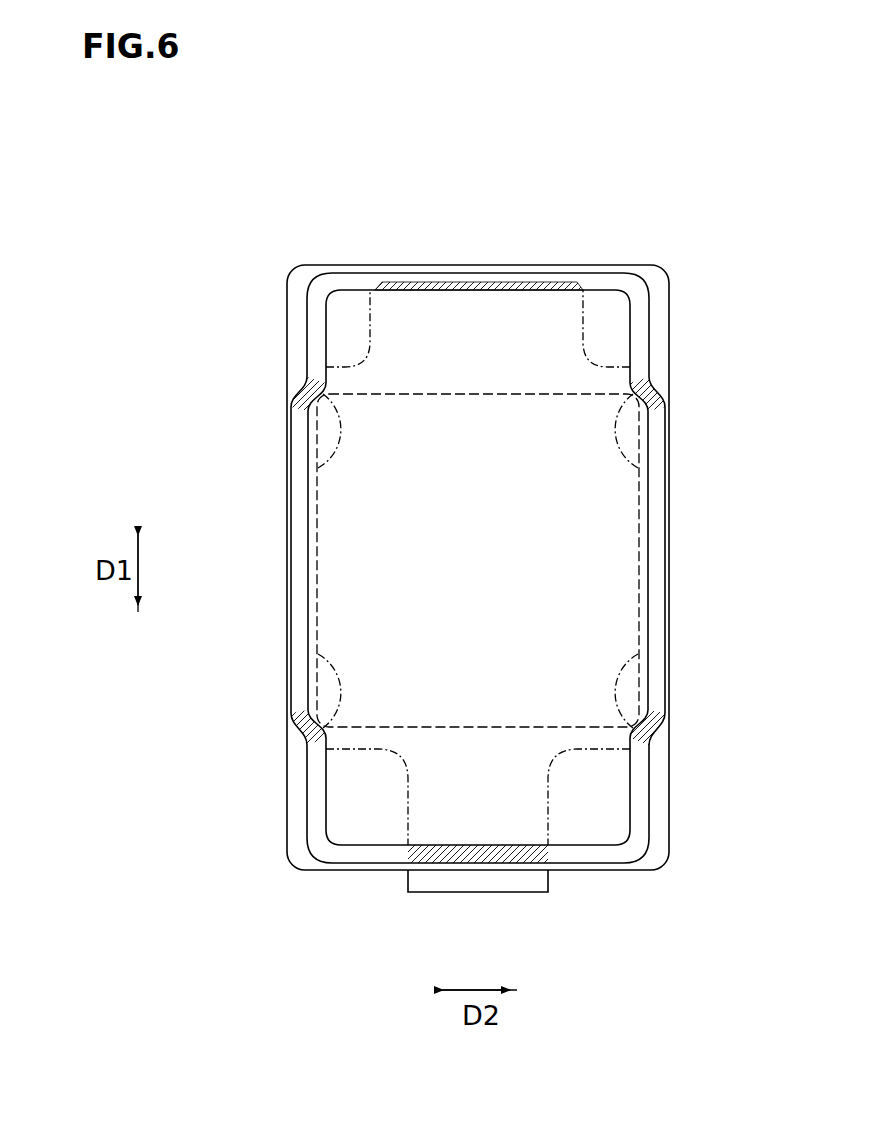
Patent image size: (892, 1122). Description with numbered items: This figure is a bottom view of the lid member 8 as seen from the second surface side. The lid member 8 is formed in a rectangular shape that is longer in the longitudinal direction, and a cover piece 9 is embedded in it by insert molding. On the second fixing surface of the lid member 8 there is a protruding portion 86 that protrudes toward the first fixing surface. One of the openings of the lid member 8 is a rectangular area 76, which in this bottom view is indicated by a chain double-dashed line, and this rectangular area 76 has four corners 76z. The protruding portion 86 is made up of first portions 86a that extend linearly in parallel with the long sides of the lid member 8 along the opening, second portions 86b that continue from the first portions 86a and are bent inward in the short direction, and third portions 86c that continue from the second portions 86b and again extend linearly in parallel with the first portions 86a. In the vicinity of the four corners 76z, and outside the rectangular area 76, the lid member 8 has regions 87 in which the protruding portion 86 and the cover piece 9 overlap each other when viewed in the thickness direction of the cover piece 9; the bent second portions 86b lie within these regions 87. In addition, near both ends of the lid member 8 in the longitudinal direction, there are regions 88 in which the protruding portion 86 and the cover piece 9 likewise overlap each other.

The lid member 8 is at (792, 165).
The cover piece 9 is at (500, 880).
The rectangular area 76 is at (545, 394).
The four corners of the rectangular area 76z is at (318, 468).
The protruding portion 86 is at (300, 555).
The first portions 86a is at (657, 540).
The second portions 86b is at (655, 400).
The third portions 86c is at (638, 323).
The regions 87 is at (308, 378).
The regions 88 is at (470, 286).